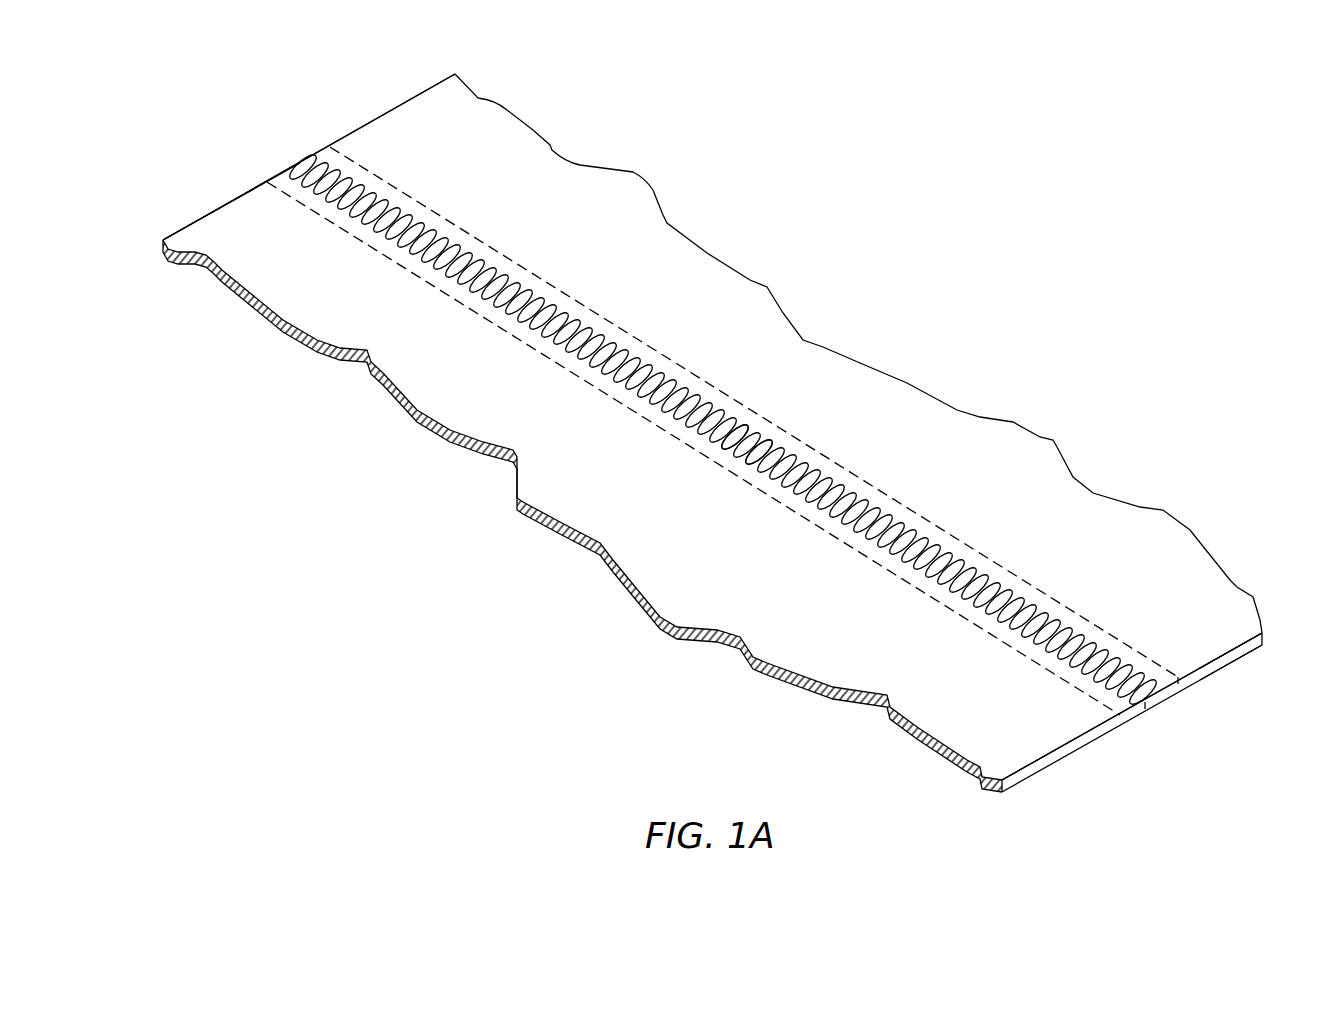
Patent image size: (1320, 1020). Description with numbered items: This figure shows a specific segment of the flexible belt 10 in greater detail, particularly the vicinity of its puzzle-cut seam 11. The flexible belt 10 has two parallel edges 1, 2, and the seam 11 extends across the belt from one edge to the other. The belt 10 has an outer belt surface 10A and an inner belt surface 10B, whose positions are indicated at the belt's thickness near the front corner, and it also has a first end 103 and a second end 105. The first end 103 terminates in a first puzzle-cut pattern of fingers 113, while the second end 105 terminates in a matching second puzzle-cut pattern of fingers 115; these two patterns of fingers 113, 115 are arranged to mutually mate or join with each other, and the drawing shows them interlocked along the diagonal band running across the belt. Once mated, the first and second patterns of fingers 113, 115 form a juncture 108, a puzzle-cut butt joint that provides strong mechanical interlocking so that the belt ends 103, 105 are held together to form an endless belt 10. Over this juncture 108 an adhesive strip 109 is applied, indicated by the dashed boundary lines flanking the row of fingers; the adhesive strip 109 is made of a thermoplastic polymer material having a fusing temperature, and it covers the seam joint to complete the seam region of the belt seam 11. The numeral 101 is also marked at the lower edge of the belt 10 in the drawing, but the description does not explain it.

The flexible belt 10 is at (290, 145).
The edge 1 is at (378, 116).
The edge 2 is at (1247, 651).
The first end 103 is at (235, 213).
The second end 105 is at (427, 113).
The lower edge 101 is at (1068, 695).
The seam 11 is at (523, 347).
The juncture 108 is at (663, 373).
The adhesive strip 109 is at (843, 465).
The first puzzle-cut pattern of fingers 113 is at (730, 448).
The second puzzle-cut pattern of fingers 115 is at (760, 437).
The outer belt surface 10A is at (1212, 660).
The inner belt surface 10B is at (1212, 680).